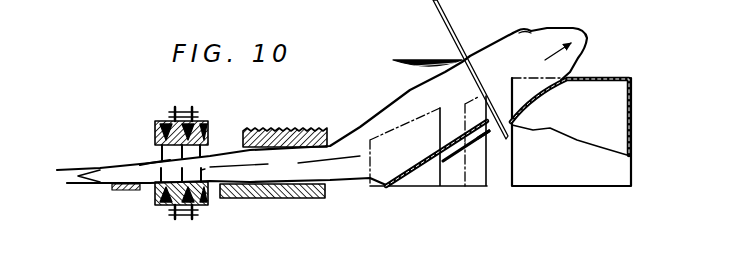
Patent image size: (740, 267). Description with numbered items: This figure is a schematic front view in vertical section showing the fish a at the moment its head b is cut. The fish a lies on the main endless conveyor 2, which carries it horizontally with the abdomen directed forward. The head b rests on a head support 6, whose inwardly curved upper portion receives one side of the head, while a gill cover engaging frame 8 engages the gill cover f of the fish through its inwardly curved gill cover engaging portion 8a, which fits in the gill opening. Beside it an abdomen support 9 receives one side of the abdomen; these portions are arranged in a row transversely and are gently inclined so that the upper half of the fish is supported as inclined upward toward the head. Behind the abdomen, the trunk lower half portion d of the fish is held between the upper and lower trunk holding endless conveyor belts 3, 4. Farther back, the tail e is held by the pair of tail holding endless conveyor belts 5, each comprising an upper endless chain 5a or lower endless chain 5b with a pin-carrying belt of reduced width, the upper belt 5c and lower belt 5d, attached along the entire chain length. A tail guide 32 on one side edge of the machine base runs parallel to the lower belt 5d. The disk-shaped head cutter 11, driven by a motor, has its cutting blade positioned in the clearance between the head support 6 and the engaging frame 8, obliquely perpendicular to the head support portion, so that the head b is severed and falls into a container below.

The main endless conveyor 2 is at (571, 142).
The upper trunk holding endless conveyor belt 3 is at (289, 125).
The lower trunk holding endless conveyor belt 4 is at (262, 200).
The tail holding endless conveyor belt 5 is at (135, 153).
The upper endless chain 5a is at (169, 112).
The lower endless chain 5b is at (173, 216).
The upper pin-carrying belt 5c is at (155, 131).
The lower pin-carrying belt 5d is at (153, 193).
The head support 6 is at (594, 76).
The gill cover engaging frame 8 is at (477, 180).
The gill cover engaging portion 8a is at (486, 142).
The abdomen support 9 is at (411, 182).
The head cutter 11 is at (441, 22).
The tail guide 32 is at (115, 188).
The fish a is at (378, 108).
The head b is at (547, 42).
The trunk lower half portion d is at (291, 166).
The tail e is at (146, 165).
The gill cover f is at (452, 164).